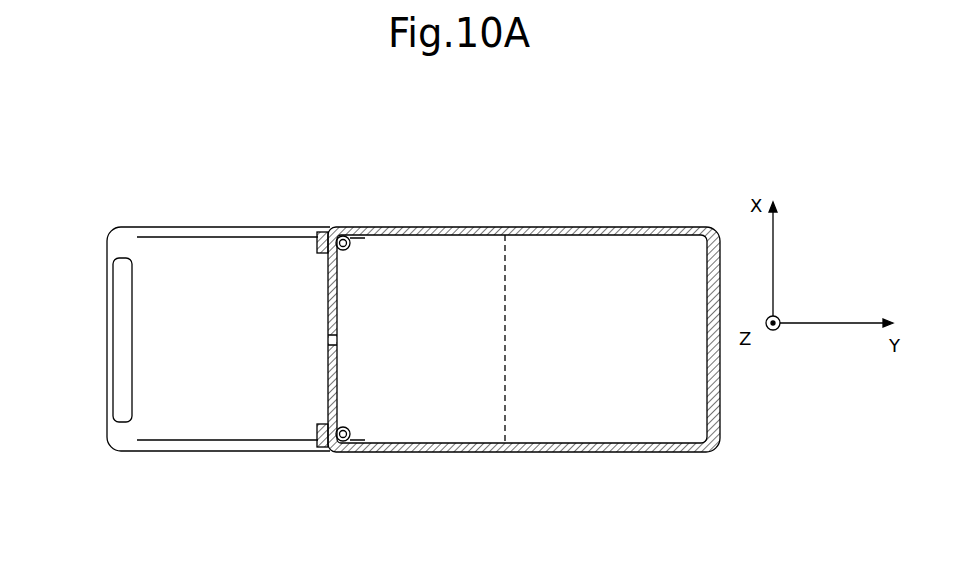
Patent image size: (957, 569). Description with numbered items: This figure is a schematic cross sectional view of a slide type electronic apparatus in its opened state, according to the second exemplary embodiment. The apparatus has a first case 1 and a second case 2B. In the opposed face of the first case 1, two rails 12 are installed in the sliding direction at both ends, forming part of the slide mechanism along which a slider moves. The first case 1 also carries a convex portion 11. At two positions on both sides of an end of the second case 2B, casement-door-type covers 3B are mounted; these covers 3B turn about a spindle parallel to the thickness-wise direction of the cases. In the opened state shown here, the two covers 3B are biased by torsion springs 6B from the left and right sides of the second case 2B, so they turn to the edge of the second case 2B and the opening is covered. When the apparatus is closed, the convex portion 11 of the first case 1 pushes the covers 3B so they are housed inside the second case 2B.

The first case 1 is at (198, 262).
The convex portion 11 is at (110, 286).
The rail 12 is at (262, 238).
The second case 2B is at (585, 228).
The cover 3B is at (337, 300).
The torsion spring 6B is at (358, 228).